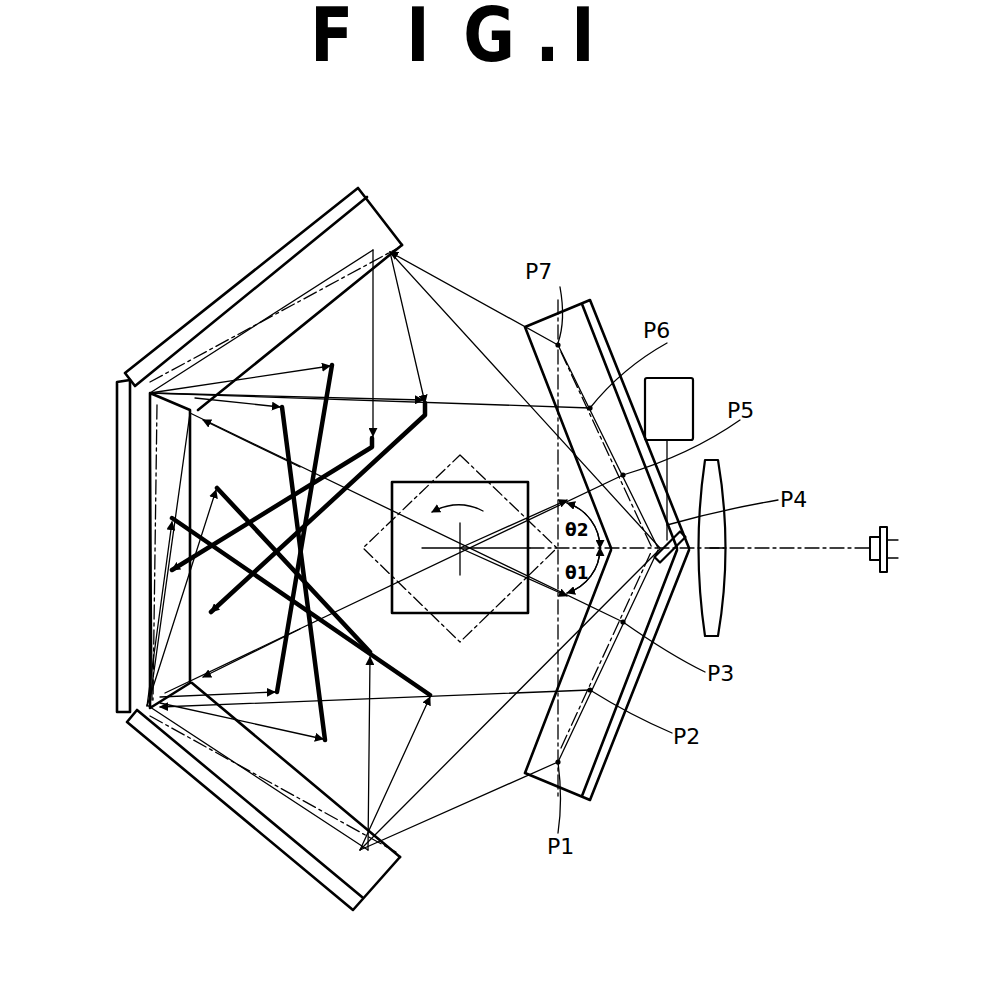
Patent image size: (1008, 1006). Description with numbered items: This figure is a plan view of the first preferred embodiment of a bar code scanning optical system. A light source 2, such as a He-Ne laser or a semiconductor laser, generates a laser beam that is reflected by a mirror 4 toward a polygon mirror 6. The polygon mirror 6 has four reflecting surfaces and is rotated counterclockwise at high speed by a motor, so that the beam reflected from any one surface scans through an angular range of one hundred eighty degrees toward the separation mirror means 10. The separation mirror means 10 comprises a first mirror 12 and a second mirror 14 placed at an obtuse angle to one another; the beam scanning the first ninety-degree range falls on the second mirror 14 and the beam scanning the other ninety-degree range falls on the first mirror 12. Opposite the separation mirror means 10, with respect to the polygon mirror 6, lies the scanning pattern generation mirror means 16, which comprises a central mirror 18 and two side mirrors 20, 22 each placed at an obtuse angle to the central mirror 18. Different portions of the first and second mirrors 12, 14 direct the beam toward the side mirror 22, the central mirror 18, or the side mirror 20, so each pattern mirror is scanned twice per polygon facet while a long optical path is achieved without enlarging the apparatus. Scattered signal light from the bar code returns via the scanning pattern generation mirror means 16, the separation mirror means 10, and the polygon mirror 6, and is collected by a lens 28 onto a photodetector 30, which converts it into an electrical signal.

The light source 2 is at (687, 385).
The mirror 4 is at (684, 560).
The polygon mirror 6 is at (500, 481).
The separation mirror means 10 is at (676, 482).
The first mirror 12 is at (597, 318).
The second mirror 14 is at (603, 767).
The scanning pattern generation mirror means 16 is at (160, 334).
The central mirror 18 is at (118, 528).
The side mirror 20 is at (272, 255).
The side mirror 22 is at (233, 803).
The lens 28 is at (723, 570).
The photodetector 30 is at (877, 537).